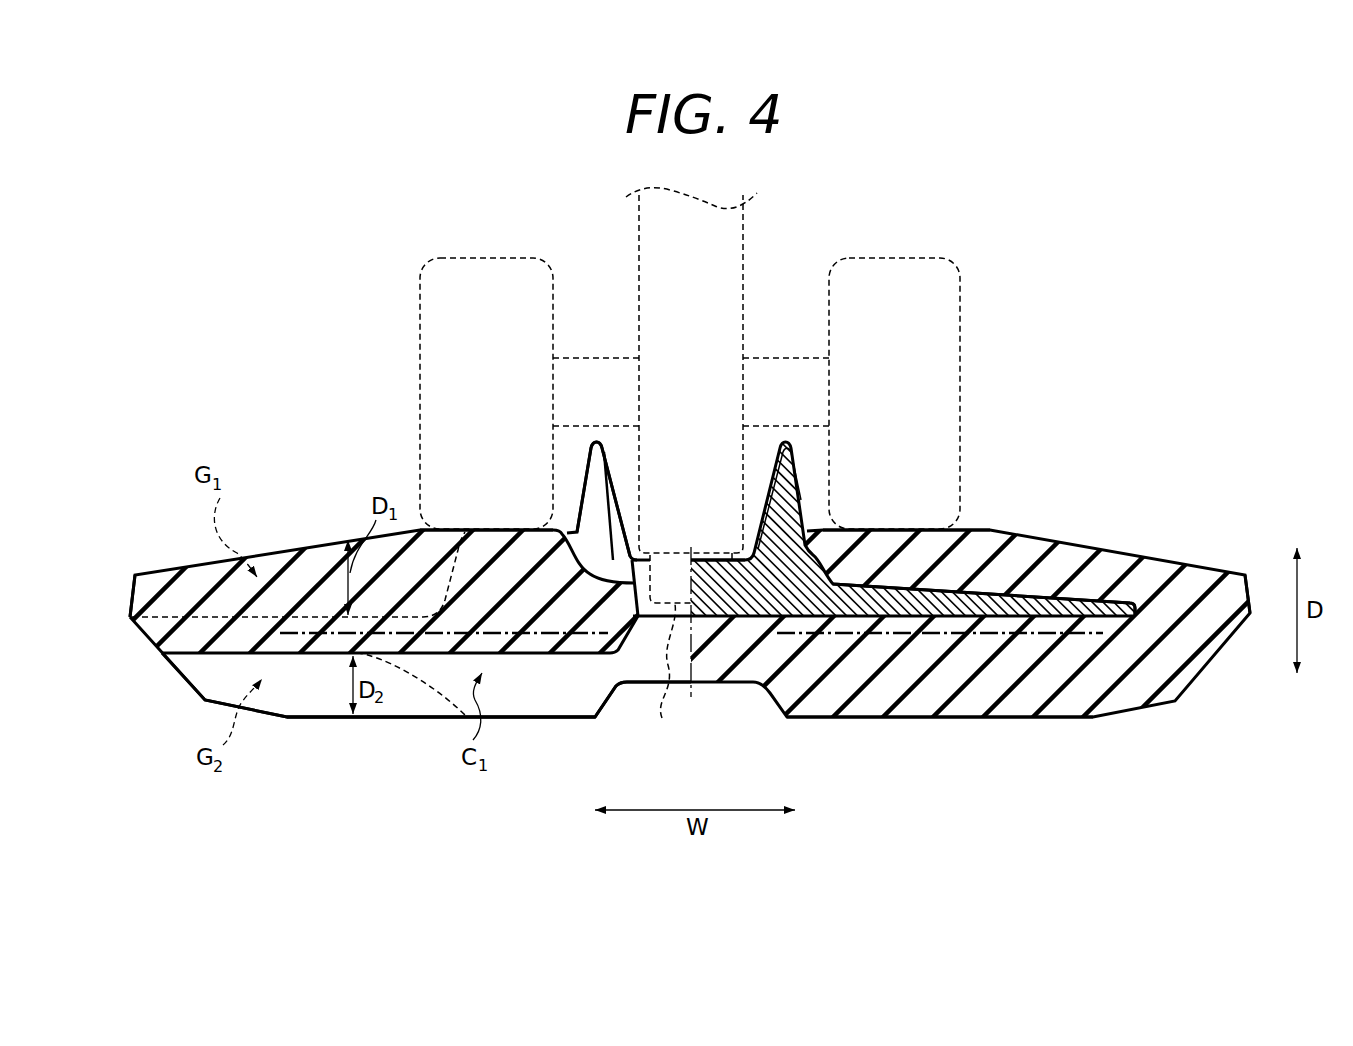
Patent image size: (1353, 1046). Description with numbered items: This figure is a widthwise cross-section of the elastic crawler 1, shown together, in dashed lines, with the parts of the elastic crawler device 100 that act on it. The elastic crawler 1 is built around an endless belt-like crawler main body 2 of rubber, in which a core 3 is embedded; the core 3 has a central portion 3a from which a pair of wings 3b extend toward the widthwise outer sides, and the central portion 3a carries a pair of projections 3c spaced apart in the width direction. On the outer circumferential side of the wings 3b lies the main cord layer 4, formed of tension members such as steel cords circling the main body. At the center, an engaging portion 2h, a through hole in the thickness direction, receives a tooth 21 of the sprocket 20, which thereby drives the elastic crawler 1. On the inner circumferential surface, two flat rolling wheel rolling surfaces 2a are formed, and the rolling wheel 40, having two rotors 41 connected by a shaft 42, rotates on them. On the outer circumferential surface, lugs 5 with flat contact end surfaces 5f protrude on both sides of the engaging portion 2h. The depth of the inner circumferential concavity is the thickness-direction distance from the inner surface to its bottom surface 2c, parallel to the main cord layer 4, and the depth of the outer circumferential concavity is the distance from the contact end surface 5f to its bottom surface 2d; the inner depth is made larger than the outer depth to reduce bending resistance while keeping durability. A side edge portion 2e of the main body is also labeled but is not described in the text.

The elastic crawler 1 is at (312, 434).
The crawler main body 2 is at (1140, 545).
The rolling wheel rolling surface 2a is at (492, 530).
The bottom surface of the inner circumferential concavity 2c is at (272, 617).
The bottom surface of the outer circumferential concavity 2d is at (343, 653).
The side edge of tire body 2e is at (131, 618).
The engaging portion 2h is at (645, 600).
The core 3 is at (790, 522).
The central portion 3a is at (720, 577).
The wing 3b is at (1073, 603).
The projection 3c is at (595, 465).
The main cord layer 4 is at (528, 640).
The lug 5 is at (410, 689).
The contact end surface 5f is at (557, 717).
The sprocket 20 is at (742, 233).
The tooth 21 is at (661, 673).
The rolling wheel 40 is at (960, 255).
The rotor 41 is at (442, 314).
The shaft 42 is at (594, 369).
The elastic crawler device 100 is at (1068, 362).